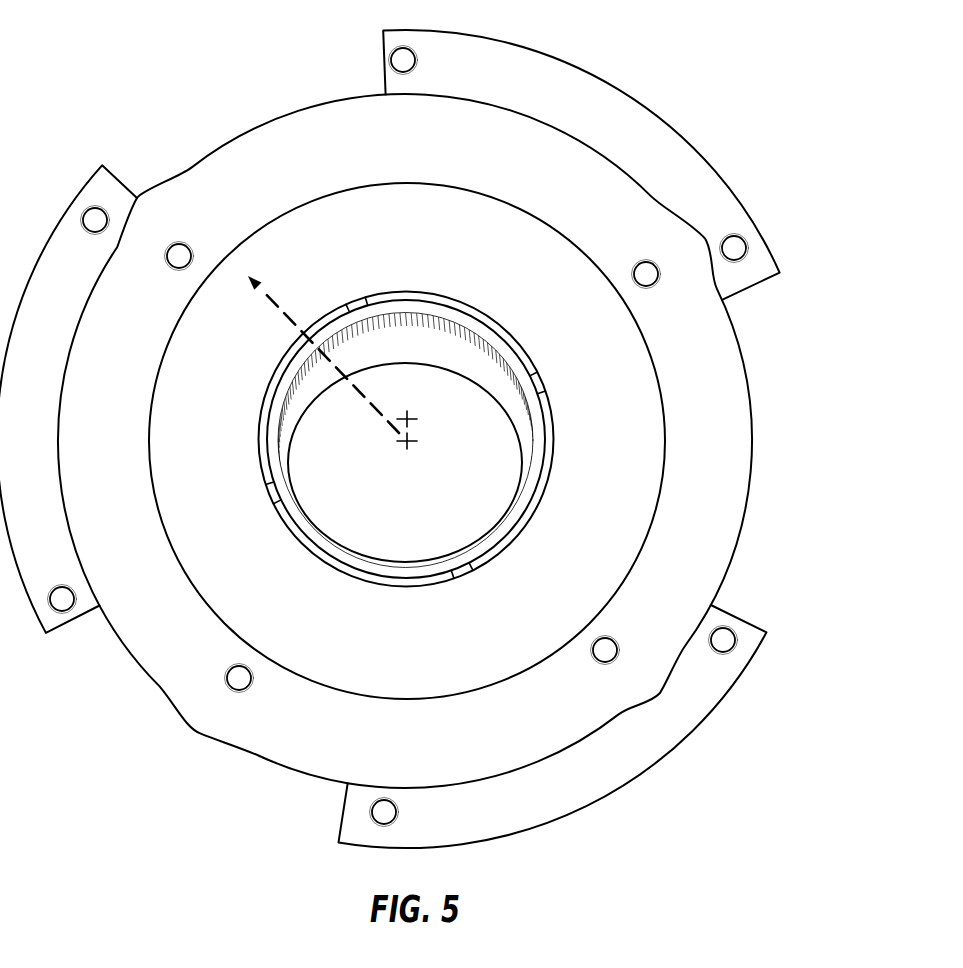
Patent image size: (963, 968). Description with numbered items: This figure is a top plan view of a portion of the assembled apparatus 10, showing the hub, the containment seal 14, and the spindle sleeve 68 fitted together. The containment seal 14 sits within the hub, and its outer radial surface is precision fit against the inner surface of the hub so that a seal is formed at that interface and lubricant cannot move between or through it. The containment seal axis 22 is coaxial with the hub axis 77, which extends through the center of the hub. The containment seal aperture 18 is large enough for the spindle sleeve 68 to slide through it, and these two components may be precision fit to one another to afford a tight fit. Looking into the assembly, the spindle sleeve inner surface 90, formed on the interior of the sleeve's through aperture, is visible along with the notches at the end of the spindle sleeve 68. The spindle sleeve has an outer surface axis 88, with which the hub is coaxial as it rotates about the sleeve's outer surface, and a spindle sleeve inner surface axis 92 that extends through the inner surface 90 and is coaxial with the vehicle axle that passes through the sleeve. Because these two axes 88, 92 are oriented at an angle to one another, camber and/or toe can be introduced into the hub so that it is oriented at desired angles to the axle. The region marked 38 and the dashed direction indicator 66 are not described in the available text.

The apparatus 10 is at (448, 439).
The containment seal 14 is at (621, 410).
The containment seal aperture 18 is at (405, 457).
The containment seal axis 22 is at (430, 469).
The housing face 38 is at (431, 251).
The tilt direction 66 is at (286, 318).
The spindle sleeve 68 is at (525, 498).
The hub axis 77 is at (430, 469).
The spindle sleeve outer surface axis 88 is at (409, 445).
The spindle sleeve inner surface 90 is at (453, 368).
The spindle sleeve inner surface axis 92 is at (411, 422).